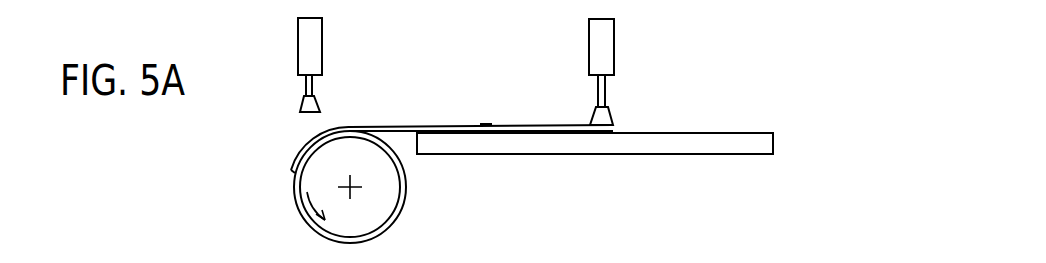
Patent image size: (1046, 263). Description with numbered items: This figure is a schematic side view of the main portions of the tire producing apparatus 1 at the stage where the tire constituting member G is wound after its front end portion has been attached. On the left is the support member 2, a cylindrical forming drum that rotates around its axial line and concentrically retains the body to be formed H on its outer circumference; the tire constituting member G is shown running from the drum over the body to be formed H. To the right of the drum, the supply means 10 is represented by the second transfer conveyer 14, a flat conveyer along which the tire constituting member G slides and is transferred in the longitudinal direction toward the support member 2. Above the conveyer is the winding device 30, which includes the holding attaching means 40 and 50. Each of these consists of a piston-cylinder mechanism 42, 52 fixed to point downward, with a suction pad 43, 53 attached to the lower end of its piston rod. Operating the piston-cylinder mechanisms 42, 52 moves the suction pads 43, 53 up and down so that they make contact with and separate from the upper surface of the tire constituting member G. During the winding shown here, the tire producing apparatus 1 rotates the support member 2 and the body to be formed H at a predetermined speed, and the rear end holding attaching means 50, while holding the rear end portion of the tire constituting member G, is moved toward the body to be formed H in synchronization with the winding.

The tire producing apparatus 1 is at (687, 168).
The support member 2 is at (375, 215).
The supply means 10 is at (596, 161).
The second transfer conveyer 14 is at (533, 148).
The winding device 30 is at (692, 60).
The holding attaching means 40 is at (277, 67).
The piston-cylinder mechanism 42 is at (302, 62).
The suction pad 43 is at (300, 107).
The holding attaching means 50 is at (635, 71).
The piston-cylinder mechanism 52 is at (608, 65).
The suction pad 53 is at (610, 115).
The tire constituting member G is at (485, 123).
The body to be formed H is at (403, 188).